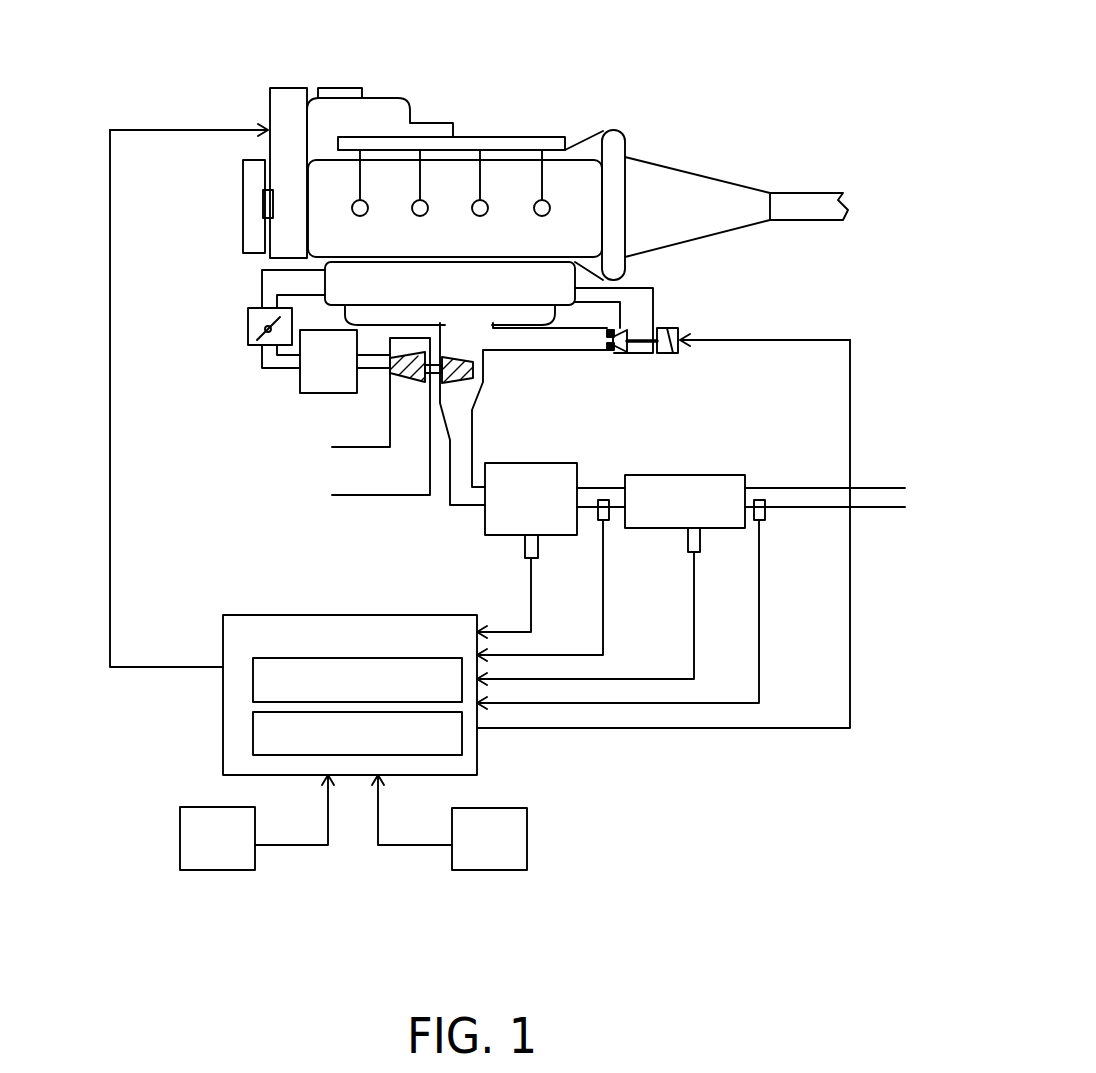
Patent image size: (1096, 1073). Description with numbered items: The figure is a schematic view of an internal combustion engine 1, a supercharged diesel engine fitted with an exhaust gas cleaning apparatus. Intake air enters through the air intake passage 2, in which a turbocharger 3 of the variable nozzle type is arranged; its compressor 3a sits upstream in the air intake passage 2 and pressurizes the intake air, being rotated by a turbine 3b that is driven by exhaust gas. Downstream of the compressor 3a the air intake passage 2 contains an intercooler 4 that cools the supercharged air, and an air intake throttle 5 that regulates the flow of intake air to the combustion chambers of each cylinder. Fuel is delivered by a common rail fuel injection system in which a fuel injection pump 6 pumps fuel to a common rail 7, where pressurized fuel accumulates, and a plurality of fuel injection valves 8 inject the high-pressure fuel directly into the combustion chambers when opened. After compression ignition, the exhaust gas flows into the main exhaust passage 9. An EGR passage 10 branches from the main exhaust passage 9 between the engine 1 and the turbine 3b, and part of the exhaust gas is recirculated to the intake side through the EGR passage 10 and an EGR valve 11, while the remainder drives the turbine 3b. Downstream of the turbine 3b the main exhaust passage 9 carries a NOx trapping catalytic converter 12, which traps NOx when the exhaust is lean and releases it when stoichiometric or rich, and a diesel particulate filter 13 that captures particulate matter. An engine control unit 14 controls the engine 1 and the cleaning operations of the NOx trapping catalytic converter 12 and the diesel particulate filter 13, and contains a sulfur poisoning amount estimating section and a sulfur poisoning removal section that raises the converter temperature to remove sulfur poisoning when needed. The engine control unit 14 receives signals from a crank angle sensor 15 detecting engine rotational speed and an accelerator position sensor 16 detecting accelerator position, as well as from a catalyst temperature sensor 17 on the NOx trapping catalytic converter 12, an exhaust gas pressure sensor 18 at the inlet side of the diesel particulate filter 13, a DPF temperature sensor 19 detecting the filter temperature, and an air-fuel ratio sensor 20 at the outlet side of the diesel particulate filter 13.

The internal combustion engine 1 is at (580, 112).
The air intake passage 2 is at (262, 287).
The turbocharger 3 is at (442, 414).
The compressor 3a is at (408, 385).
The turbine 3b is at (466, 382).
The intercooler 4 is at (298, 384).
The air intake throttle 5 is at (248, 330).
The fuel injection pump 6 is at (384, 99).
The common rail 7 is at (458, 137).
The fuel injection valves 8 is at (534, 208).
The main exhaust passage 9 is at (480, 458).
The EGR passage 10 is at (653, 303).
The EGR valve 11 is at (683, 350).
The NOx trapping catalytic converter 12 is at (560, 463).
The diesel particulate filter 13 is at (672, 475).
The engine control unit 14 is at (395, 615).
The crank angle sensor 15 is at (180, 838).
The accelerator position sensor 16 is at (527, 838).
The catalyst temperature sensor 17 is at (525, 549).
The exhaust gas pressure sensor 18 is at (598, 517).
The DPF temperature sensor 19 is at (688, 541).
The air-fuel ratio sensor 20 is at (756, 517).